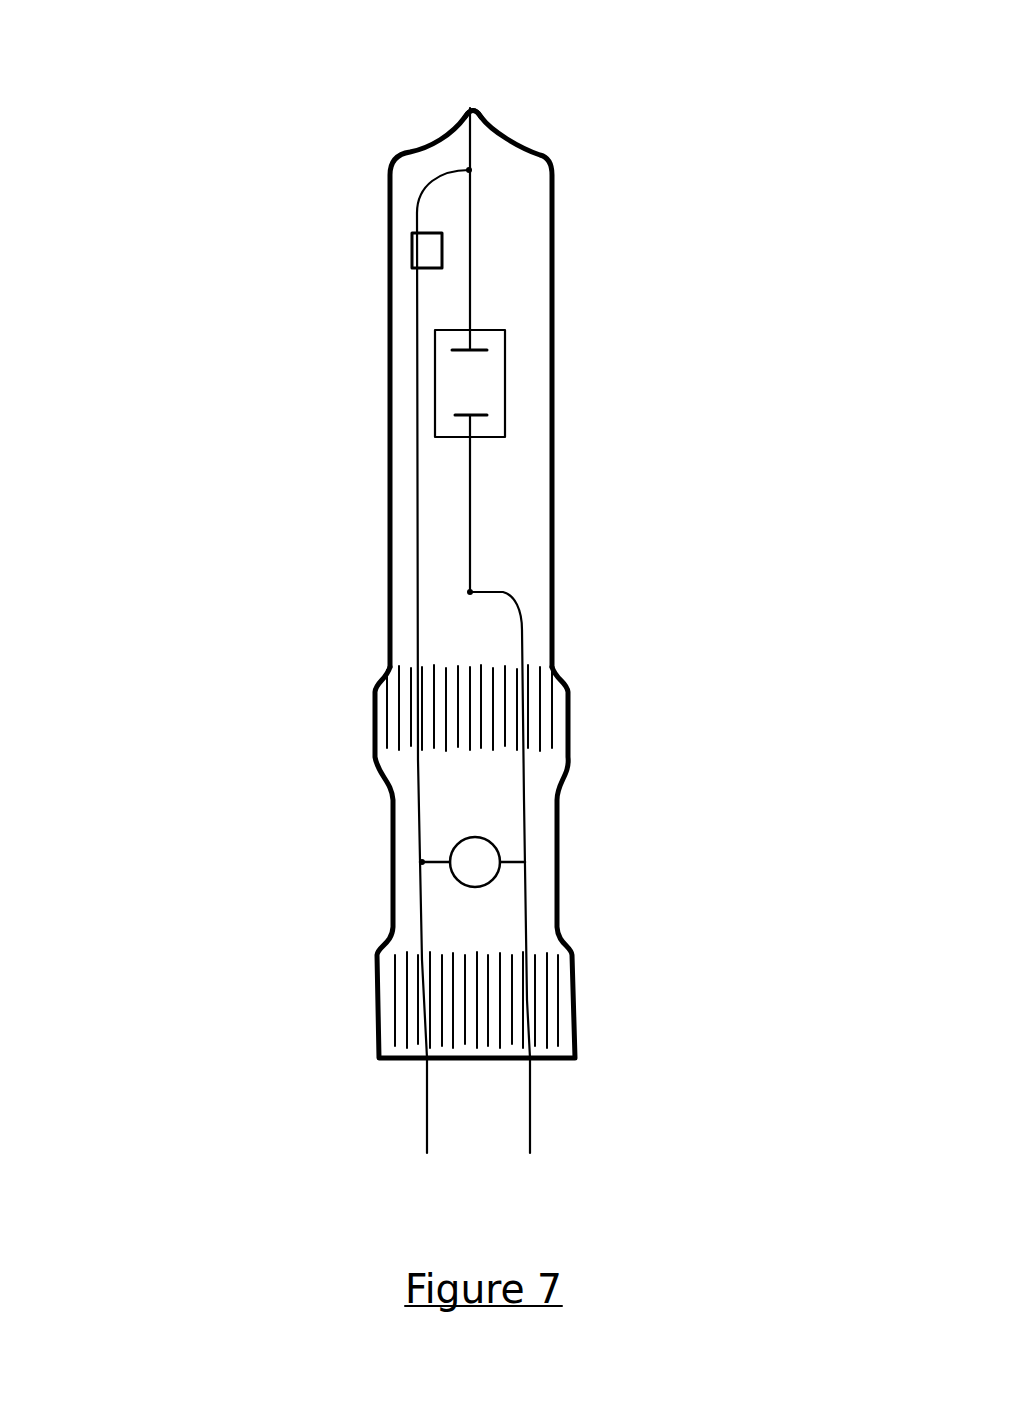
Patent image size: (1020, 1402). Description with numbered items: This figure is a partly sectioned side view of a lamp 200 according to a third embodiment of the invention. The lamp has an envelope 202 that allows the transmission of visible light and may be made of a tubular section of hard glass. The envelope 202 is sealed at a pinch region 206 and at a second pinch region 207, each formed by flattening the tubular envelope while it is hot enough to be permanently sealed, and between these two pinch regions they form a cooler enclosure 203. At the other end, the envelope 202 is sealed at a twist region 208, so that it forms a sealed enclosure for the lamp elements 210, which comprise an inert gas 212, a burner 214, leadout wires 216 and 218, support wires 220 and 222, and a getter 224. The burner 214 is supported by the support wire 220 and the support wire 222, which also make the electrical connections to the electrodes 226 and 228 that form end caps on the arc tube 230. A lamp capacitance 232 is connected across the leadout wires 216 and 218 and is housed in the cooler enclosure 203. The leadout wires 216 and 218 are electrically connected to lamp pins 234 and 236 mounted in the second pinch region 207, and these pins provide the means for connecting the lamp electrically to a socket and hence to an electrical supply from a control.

The lamp 200 is at (298, 702).
The envelope 202 is at (556, 181).
The cooler enclosure 203 is at (540, 830).
The pinch region 206 is at (543, 693).
The second pinch region 207 is at (543, 998).
The twist region 208 is at (477, 103).
The lamp elements 210 is at (503, 281).
The inert gas 212 is at (527, 485).
The burner 214 is at (508, 367).
The leadout wire 216 is at (417, 482).
The leadout wire 218 is at (508, 592).
The support wire 220 is at (469, 151).
The support wire 222 is at (468, 533).
The getter 224 is at (412, 250).
The electrode 226 is at (460, 357).
The electrode 228 is at (463, 411).
The arc tube 230 is at (505, 403).
The lamp capacitance 232 is at (468, 857).
The lamp pin 234 is at (427, 1115).
The lamp pin 236 is at (533, 1107).